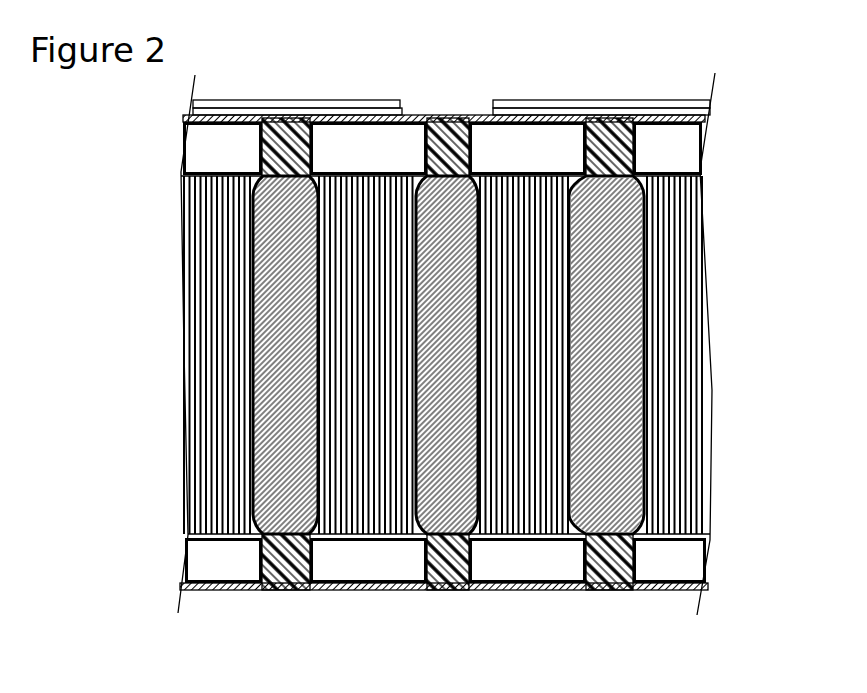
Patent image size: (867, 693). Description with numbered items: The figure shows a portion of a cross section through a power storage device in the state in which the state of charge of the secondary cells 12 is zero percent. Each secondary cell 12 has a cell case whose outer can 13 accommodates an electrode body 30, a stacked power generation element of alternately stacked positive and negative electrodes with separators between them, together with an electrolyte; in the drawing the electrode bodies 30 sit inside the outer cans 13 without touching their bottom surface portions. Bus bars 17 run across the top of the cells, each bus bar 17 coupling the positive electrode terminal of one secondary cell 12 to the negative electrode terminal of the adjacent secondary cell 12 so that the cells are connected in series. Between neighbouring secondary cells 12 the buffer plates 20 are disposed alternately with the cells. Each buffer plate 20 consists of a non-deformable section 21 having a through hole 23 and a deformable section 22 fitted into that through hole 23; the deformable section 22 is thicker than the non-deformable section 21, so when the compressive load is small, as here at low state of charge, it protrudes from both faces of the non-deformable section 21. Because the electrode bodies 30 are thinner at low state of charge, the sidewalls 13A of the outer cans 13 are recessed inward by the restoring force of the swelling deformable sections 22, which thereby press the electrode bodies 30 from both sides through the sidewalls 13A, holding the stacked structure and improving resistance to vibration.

The bus bar 17 is at (278, 104).
The electrode body 30 is at (358, 172).
The non-deformable section 21 is at (612, 118).
The through hole 23 is at (632, 200).
The deformable section 22 is at (627, 277).
The outer can 13 is at (735, 355).
The sidewall 13A is at (680, 482).
The secondary cell 12 is at (366, 599).
The buffer plate 20 is at (449, 599).